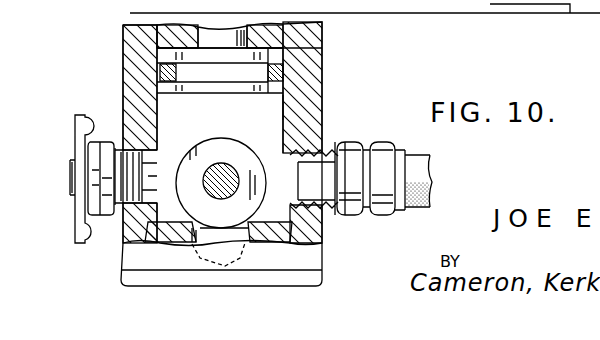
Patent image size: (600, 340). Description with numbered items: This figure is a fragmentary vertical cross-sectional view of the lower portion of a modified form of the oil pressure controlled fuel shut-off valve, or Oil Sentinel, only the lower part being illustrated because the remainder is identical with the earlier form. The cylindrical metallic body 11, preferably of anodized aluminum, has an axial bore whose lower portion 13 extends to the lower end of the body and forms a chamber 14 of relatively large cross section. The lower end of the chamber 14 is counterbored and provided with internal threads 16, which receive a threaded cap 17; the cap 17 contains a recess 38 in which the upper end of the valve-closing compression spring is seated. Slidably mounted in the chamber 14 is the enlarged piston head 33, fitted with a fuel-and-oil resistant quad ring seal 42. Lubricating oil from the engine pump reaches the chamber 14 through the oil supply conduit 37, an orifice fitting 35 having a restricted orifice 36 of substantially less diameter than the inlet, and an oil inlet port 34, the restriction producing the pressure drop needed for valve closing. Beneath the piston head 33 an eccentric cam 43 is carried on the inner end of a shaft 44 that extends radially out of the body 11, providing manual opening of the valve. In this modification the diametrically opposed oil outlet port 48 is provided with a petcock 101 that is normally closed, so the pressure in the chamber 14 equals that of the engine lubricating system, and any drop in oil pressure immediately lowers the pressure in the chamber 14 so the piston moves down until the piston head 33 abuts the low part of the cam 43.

The body 11 is at (121, 35).
The lower portion of the bore 13 is at (283, 113).
The chamber 14 is at (273, 103).
The internal threads 16 is at (297, 230).
The threaded cap 17 is at (148, 275).
The piston head 33 is at (186, 90).
The oil inlet port 34 is at (290, 155).
The orifice fitting 35 is at (353, 152).
The restricted orifice 36 is at (317, 178).
The oil supply conduit 37 is at (423, 168).
The recess 38 is at (206, 235).
The quad ring seal 42 is at (162, 72).
The eccentric cam 43 is at (181, 198).
The shaft 44 is at (222, 176).
The oil outlet port 48 is at (150, 160).
The petcock 101 is at (78, 158).